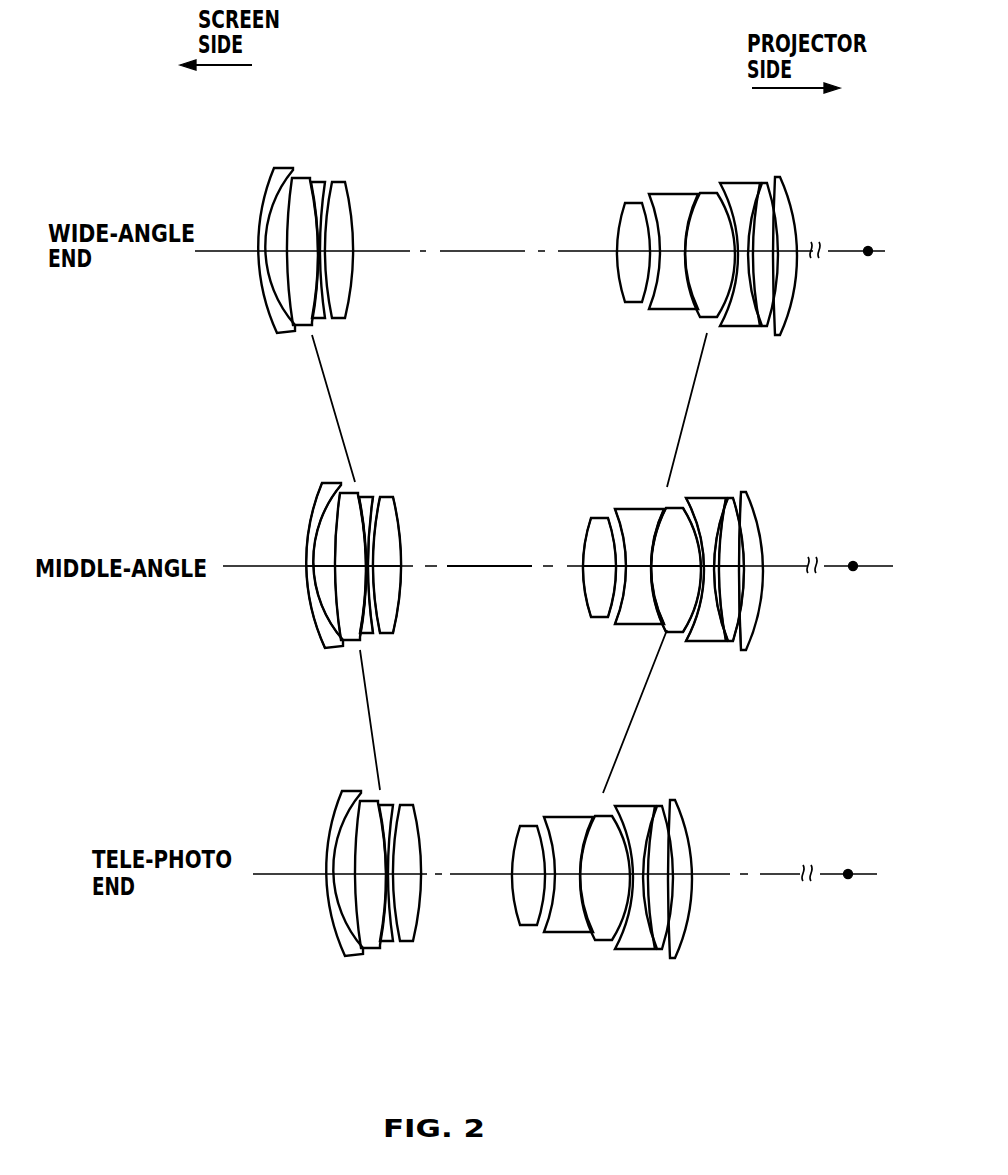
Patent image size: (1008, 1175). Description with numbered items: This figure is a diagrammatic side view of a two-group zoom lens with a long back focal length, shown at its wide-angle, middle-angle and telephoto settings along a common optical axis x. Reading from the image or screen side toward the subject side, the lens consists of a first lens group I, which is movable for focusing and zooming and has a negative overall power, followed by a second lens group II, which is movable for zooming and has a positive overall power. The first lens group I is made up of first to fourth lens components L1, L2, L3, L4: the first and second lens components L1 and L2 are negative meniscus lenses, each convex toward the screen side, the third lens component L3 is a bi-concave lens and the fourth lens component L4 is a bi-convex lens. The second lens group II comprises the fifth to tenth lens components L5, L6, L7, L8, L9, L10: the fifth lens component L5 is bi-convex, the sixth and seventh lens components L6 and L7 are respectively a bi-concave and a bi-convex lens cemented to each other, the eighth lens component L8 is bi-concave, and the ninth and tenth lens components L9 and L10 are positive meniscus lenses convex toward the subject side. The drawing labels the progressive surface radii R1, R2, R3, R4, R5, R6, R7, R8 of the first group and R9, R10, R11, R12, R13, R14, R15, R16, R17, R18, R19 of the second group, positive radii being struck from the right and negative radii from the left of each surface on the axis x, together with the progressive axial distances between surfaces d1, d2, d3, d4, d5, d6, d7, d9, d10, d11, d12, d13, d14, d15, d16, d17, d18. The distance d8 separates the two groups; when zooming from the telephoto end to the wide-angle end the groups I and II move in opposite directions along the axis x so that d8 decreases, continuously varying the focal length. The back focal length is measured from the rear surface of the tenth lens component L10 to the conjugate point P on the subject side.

The first lens group I is at (425, 98).
The second lens group II is at (858, 118).
The first lens component L1 is at (275, 168).
The second lens component L2 is at (298, 183).
The third lens component L3 is at (323, 182).
The fourth lens component L4 is at (347, 181).
The fifth lens component L5 is at (627, 203).
The sixth lens component L6 is at (673, 207).
The seventh lens component L7 is at (707, 207).
The eighth lens component L8 is at (742, 200).
The ninth lens component L9 is at (767, 192).
The tenth lens component L10 is at (790, 193).
The axial distance d1 is at (306, 560).
The axial distance d2 is at (313, 556).
The axial distance d3 is at (335, 552).
The axial distance d4 is at (366, 552).
The axial distance d5 is at (368, 552).
The axial distance d6 is at (373, 555).
The axial distance d7 is at (401, 556).
The axial distance d8 is at (495, 566).
The axial distance d9 is at (583, 548).
The axial distance d10 is at (616, 548).
The axial distance d11 is at (626, 545).
The axial distance d12 is at (651, 545).
The axial distance d13 is at (701, 545).
The axial distance d14 is at (704, 545).
The axial distance d15 is at (719, 548).
The axial distance d16 is at (714, 550).
The axial distance d17 is at (744, 550).
The axial distance d18 is at (739, 560).
The lens surface radius R1 is at (306, 595).
The lens surface radius R2 is at (313, 620).
The lens surface radius R3 is at (335, 632).
The lens surface radius R4 is at (366, 636).
The lens surface radius R5 is at (368, 636).
The lens surface radius R6 is at (373, 636).
The lens surface radius R7 is at (401, 618).
The lens surface radius R8 is at (401, 590).
The lens surface radius R9 is at (583, 585).
The lens surface radius R10 is at (616, 610).
The lens surface radius R11 is at (626, 625).
The lens surface radius R12 is at (651, 630).
The lens surface radius R13 is at (651, 630).
The lens surface radius R14 is at (701, 640).
The lens surface radius R15 is at (704, 645).
The lens surface radius R16 is at (719, 645).
The lens surface radius R17 is at (714, 640).
The lens surface radius R18 is at (744, 620).
The lens surface radius R19 is at (739, 590).
The optical axis x is at (808, 248).
The conjugate point P is at (868, 250).